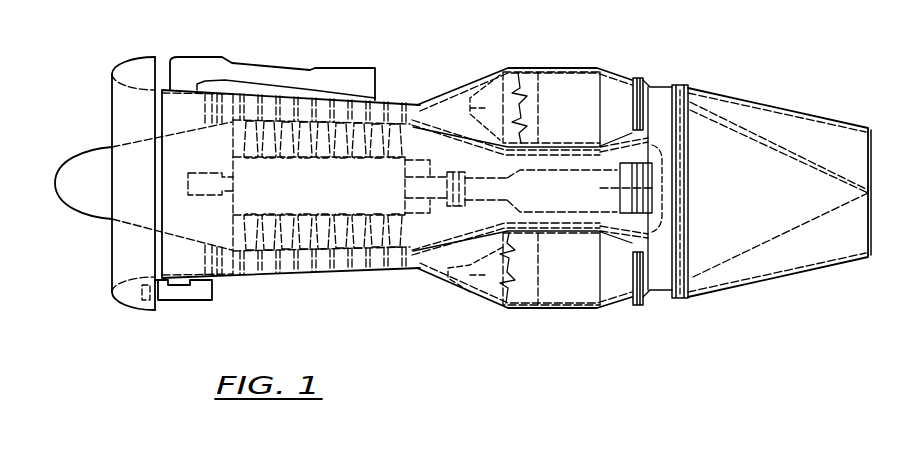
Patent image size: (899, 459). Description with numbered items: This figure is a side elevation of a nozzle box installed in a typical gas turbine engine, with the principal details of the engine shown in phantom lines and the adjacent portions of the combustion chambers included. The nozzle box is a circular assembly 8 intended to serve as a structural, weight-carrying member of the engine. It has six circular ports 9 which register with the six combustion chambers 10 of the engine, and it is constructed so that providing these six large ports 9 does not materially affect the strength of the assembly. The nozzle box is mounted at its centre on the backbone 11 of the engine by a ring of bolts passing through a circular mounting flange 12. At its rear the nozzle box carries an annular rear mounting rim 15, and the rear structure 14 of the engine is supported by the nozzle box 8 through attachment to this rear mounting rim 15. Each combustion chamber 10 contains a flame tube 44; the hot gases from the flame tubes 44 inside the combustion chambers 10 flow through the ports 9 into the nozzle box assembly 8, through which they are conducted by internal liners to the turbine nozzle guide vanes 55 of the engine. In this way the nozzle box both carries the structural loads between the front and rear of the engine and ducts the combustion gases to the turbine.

The nozzle box assembly 8 is at (641, 75).
The circular port 9 is at (618, 97).
The combustion chamber 10 is at (541, 71).
The backbone 11 is at (440, 94).
The mounting flange 12 is at (650, 147).
The rear structure 14 is at (770, 268).
The rear mounting rim 15 is at (689, 84).
The flame tube 44 is at (488, 78).
The turbine nozzle guide vane 55 is at (690, 102).